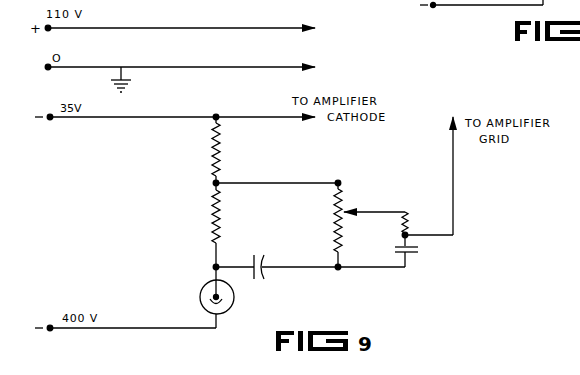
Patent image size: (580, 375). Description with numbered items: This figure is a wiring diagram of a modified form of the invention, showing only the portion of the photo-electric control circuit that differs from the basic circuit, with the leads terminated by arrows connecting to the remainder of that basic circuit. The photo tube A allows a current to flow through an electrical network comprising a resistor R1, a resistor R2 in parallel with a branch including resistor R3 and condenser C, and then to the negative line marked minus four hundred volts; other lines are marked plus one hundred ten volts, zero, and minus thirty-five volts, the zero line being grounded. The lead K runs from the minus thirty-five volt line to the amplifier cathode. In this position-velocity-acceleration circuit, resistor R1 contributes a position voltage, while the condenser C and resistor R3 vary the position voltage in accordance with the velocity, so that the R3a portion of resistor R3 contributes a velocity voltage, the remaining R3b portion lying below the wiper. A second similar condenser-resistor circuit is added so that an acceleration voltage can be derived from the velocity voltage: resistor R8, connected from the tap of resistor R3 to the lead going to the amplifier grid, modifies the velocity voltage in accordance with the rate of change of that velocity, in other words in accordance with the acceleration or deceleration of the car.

The resistor R1 is at (226, 150).
The resistor R2 is at (226, 225).
The resistor R3 is at (339, 225).
The portion of resistor R3 R3a is at (357, 193).
The portion of resistor R3 R3b is at (357, 236).
The resistor R8 is at (415, 229).
The condenser C is at (259, 259).
The cathode lead K is at (270, 109).
The photo tube A is at (182, 297).